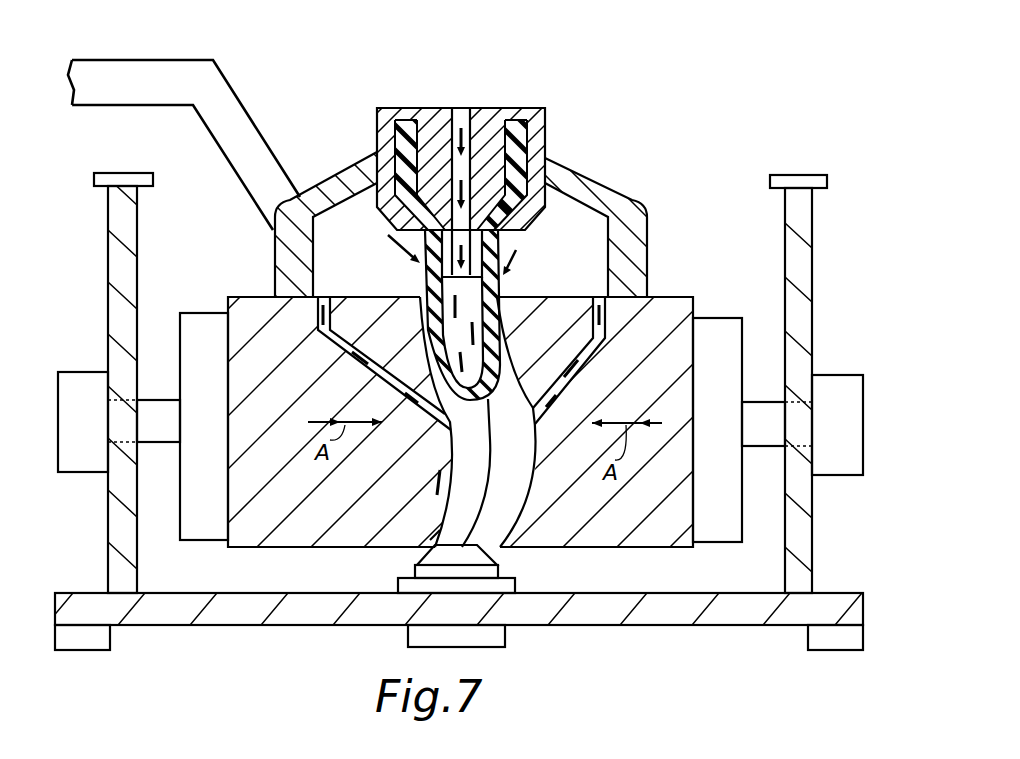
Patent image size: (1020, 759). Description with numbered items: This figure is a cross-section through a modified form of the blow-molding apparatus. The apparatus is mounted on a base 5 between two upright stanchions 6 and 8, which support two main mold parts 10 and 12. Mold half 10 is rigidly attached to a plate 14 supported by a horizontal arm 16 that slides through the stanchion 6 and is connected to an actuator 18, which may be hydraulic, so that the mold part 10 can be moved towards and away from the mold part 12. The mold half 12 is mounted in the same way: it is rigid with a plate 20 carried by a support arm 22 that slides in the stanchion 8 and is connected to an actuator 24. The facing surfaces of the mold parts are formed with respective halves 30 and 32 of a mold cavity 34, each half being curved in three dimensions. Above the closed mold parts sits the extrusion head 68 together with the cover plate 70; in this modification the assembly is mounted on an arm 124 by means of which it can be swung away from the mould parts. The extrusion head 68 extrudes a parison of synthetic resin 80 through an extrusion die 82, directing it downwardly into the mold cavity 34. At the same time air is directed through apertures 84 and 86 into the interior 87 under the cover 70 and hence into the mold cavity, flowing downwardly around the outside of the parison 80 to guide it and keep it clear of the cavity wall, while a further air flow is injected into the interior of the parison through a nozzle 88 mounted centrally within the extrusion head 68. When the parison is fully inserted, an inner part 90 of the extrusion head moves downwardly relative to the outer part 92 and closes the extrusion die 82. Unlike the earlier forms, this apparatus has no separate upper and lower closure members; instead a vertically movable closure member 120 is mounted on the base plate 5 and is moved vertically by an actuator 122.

The base 5 is at (260, 607).
The stanchion 6 is at (123, 225).
The stanchion 8 is at (802, 557).
The mold part 10 is at (240, 481).
The mold part 12 is at (660, 320).
The plate 14 is at (194, 318).
The horizontal arm 16 is at (168, 418).
The actuator 18 is at (70, 388).
The plate 20 is at (730, 517).
The support arm 22 is at (768, 402).
The actuator 24 is at (842, 403).
The mold cavity half 30 is at (484, 467).
The mold cavity half 32 is at (516, 487).
The mold cavity 34 is at (438, 527).
The extrusion head 68 is at (505, 98).
The cover plate 70 is at (617, 193).
The parison 80 is at (498, 250).
The extrusion die 82 is at (407, 110).
The aperture 84 is at (336, 187).
The aperture 86 is at (580, 182).
The interior 87 is at (577, 282).
The nozzle 88 is at (462, 108).
The inner part 90 is at (425, 115).
The outer part 92 is at (537, 122).
The closure member 120 is at (475, 559).
The actuator 122 is at (482, 639).
The arm 124 is at (225, 103).